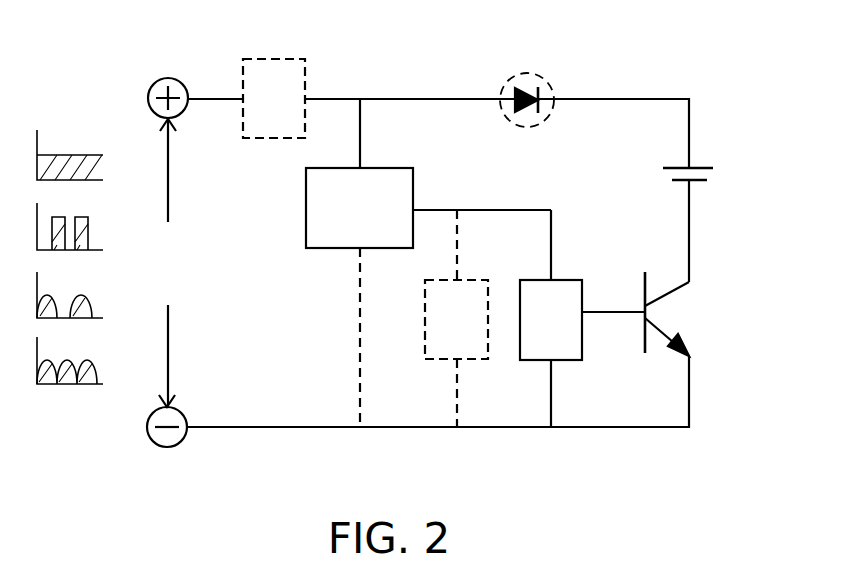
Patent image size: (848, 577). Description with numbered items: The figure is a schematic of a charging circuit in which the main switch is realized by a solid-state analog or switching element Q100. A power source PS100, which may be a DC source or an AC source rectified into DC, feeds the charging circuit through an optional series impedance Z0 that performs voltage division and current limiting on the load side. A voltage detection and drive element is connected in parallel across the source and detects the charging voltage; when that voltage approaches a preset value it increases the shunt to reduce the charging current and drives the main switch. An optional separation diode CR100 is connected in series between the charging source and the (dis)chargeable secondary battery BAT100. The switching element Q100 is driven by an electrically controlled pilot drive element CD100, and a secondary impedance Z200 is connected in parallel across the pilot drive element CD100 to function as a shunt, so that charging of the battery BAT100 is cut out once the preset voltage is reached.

The power source PS100 is at (113, 262).
The impedance Z0 is at (274, 98).
The secondary impedance Z200 is at (456, 318).
The electrically controlled pilot drive element CD100 is at (582, 318).
The separation diode CR100 is at (542, 97).
The (dis)chargeable secondary battery BAT100 is at (743, 181).
The solid-state analog or switching element Q100 is at (707, 314).